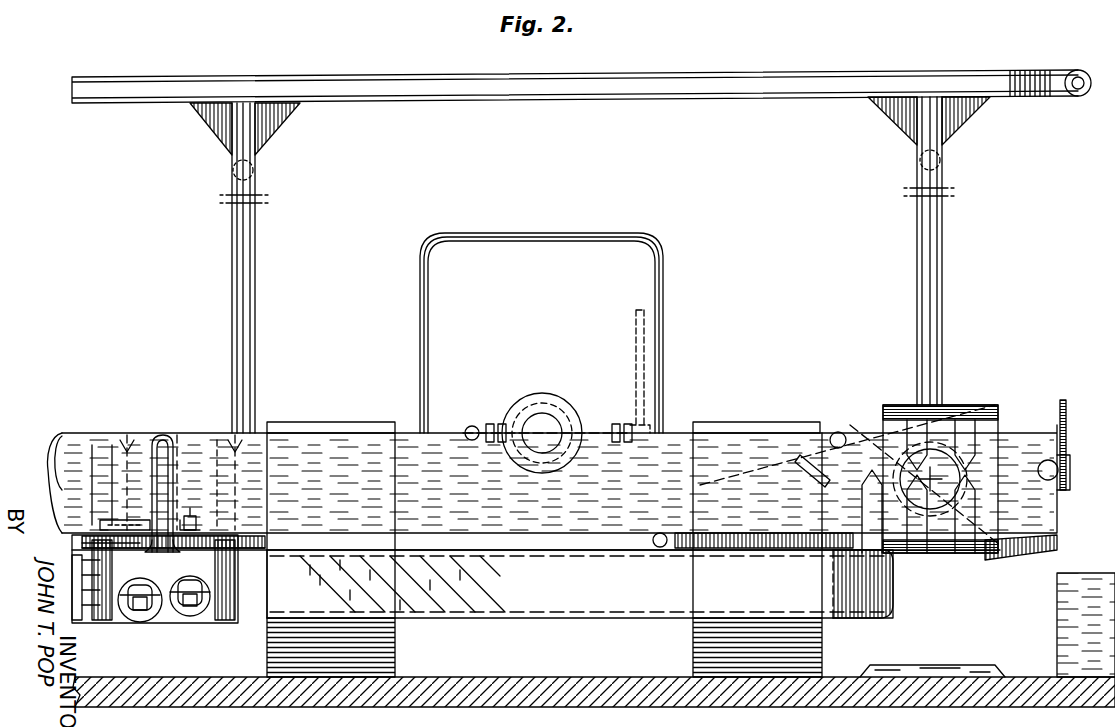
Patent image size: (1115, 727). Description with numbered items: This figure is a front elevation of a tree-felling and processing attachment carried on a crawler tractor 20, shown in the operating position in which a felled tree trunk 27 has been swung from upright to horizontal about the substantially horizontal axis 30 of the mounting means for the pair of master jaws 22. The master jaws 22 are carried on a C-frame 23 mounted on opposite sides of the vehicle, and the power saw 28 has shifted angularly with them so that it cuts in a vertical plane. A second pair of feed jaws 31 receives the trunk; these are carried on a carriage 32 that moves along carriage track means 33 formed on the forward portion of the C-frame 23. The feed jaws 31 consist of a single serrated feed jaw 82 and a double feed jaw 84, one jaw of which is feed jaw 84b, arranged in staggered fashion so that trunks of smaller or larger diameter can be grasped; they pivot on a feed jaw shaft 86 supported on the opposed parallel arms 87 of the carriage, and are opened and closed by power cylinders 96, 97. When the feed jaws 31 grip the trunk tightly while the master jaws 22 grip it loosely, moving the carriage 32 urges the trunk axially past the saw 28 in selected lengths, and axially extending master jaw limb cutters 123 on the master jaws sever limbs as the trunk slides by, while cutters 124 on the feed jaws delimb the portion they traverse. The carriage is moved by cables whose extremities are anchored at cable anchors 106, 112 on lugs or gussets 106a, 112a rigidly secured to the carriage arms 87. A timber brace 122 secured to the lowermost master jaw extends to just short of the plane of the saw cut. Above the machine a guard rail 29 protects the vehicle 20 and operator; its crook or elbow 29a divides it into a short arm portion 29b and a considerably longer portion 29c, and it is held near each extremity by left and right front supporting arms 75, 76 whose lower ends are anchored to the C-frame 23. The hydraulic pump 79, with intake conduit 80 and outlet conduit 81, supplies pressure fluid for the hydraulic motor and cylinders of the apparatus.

The crawler tractor 20 is at (664, 303).
The master jaws 22 is at (971, 403).
The C-frame 23 is at (573, 600).
The tree trunk 27 is at (395, 430).
The power saw 28 is at (1066, 410).
The guard rail 29 is at (665, 72).
The crook or elbow 29a is at (972, 50).
The short arm portion 29b is at (1072, 70).
The longer portion 29c is at (462, 103).
The horizontal axis 30 is at (945, 465).
The feed jaws 31 is at (135, 430).
The carriage 32 is at (240, 600).
The carriage track means 33 is at (482, 555).
The left front supporting arm 75 is at (942, 220).
The right front supporting arm 76 is at (257, 228).
The hydraulic pump 79 is at (545, 395).
The intake conduit 80 is at (470, 428).
The outlet conduit 81 is at (636, 343).
The single feed jaw 82 is at (163, 433).
The double feed jaw 84 is at (70, 433).
The feed jaw 84b is at (217, 432).
The feed jaw shaft 86 is at (240, 571).
The parallel arms 87 is at (189, 577).
The power cylinder 96 is at (140, 618).
The power cylinder 97 is at (188, 612).
The cable anchor 106 is at (195, 520).
The lug or gusset 106a is at (190, 516).
The cable anchor point 112 is at (150, 525).
The lug or gusset 112a is at (85, 545).
The timber brace 122 is at (1000, 558).
The master jaw limb cutters 123 is at (883, 425).
The cutters 124 is at (112, 455).